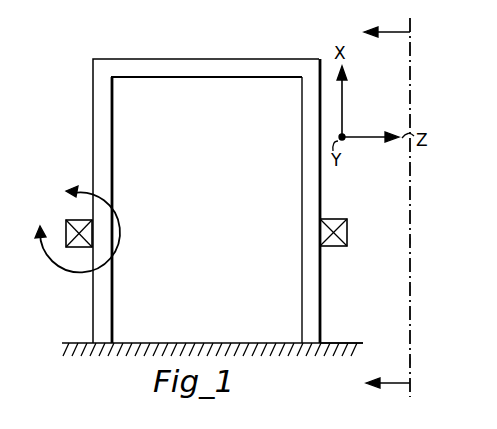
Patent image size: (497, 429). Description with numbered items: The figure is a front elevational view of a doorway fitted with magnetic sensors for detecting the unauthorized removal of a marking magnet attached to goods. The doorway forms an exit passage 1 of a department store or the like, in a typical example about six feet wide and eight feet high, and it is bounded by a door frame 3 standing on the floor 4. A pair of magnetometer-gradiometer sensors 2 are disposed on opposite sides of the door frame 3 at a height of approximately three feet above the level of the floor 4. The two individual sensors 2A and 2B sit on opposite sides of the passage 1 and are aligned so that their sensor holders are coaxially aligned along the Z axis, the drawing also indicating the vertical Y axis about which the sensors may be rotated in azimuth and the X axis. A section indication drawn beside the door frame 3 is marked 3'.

The passage 1 is at (204, 100).
The magnetometer-gradiometer sensors 2 is at (396, 212).
The sensor 2A is at (66, 224).
The sensor 2B is at (345, 220).
The door frame 3 is at (160, 210).
The door opening position 3' is at (341, 322).
The floor 4 is at (187, 343).